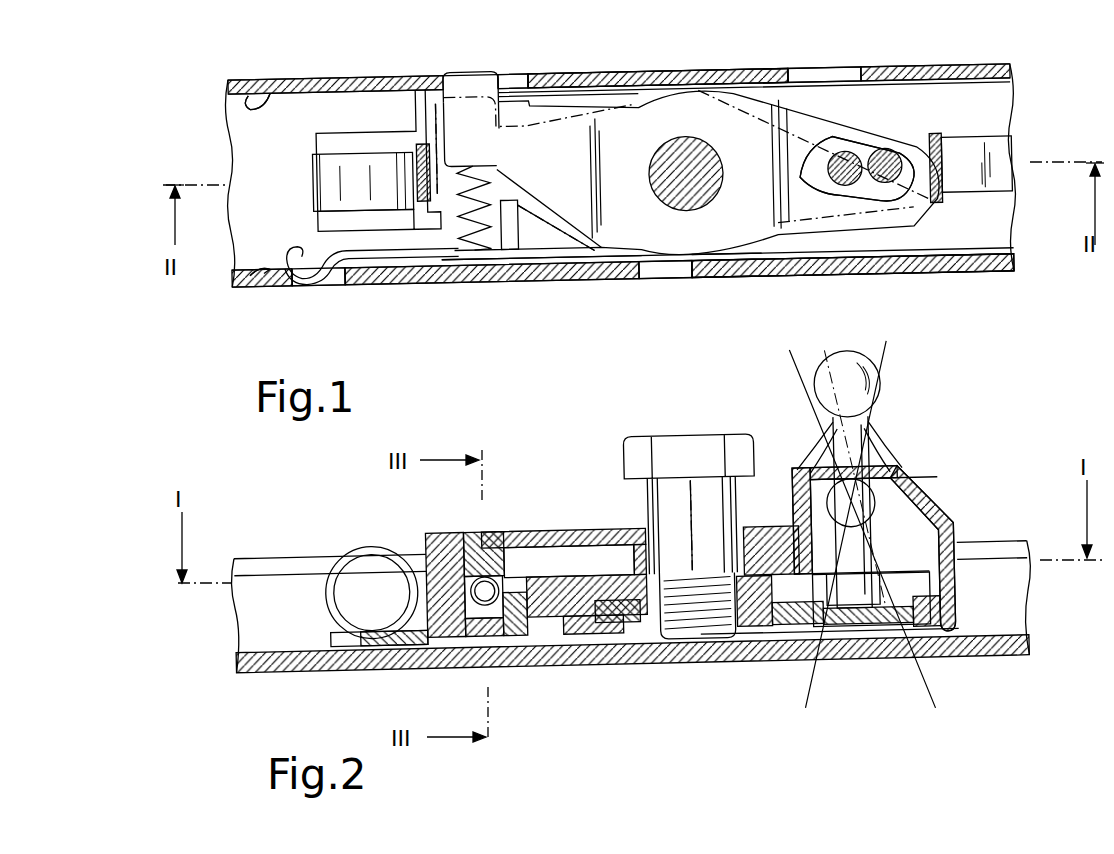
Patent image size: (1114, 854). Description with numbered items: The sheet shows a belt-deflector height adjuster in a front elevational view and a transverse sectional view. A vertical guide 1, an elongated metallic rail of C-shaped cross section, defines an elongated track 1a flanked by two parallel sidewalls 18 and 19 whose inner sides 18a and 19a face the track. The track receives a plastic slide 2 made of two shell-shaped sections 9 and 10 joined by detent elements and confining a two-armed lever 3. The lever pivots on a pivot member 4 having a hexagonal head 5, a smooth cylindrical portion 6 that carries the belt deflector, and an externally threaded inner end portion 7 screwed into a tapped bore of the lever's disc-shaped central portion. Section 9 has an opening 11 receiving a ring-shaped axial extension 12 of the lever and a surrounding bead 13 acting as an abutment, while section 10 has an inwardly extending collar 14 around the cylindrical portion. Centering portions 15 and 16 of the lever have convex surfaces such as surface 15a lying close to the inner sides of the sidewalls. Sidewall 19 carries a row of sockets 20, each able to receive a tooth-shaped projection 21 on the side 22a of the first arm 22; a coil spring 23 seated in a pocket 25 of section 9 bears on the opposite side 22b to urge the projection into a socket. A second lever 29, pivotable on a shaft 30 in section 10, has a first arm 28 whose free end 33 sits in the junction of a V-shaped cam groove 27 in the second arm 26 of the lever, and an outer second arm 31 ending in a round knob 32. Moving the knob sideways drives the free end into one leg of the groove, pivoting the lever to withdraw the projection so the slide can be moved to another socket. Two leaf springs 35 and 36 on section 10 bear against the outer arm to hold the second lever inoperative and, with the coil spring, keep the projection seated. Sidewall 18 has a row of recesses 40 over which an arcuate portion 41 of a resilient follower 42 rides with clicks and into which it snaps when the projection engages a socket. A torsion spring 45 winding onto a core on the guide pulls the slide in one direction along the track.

In FIG. 1, the guide 1 is at (520, 286).
In FIG. 2, the guide 1 is at (268, 686).
In FIG. 1, the track 1a is at (286, 182).
In FIG. 1, the slide 2 is at (548, 268).
In FIG. 1, the lever 3 is at (566, 160).
In FIG. 2, the lever 3 is at (541, 648).
In FIG. 1, the pivot member 4 is at (660, 160).
In FIG. 2, the pivot member 4 is at (655, 512).
In FIG. 2, the head 5 is at (692, 438).
In FIG. 2, the smooth cylindrical portion 6 is at (699, 529).
In FIG. 2, the externally threaded inner end portion 7 is at (690, 627).
In FIG. 2, the section 9 is at (590, 650).
In FIG. 2, the section 10 is at (553, 533).
In FIG. 2, the opening 11 is at (755, 648).
In FIG. 2, the ring-shaped axial extension 12 is at (635, 652).
In FIG. 2, the bead 13 is at (795, 652).
In FIG. 2, the collar 14 is at (760, 551).
In FIG. 1, the centering portion 15 is at (740, 252).
In FIG. 1, the convex surface 15a is at (722, 259).
In FIG. 1, the centering portion 16 is at (636, 108).
In FIG. 1, the sidewall 18 is at (830, 274).
In FIG. 1, the inner side 18a is at (254, 268).
In FIG. 1, the sidewall 19 is at (708, 75).
In FIG. 1, the inner side 19a is at (279, 84).
In FIG. 1, the socket 20 is at (512, 80).
In FIG. 1, the projection 21 is at (468, 78).
In FIG. 1, the first arm 22 is at (490, 151).
In FIG. 1, the side 22a is at (540, 100).
In FIG. 1, the side 22b is at (594, 193).
In FIG. 1, the coil spring 23 is at (470, 251).
In FIG. 2, the coil spring 23 is at (489, 662).
In FIG. 1, the pocket 25 is at (505, 250).
In FIG. 1, the second arm 26 is at (807, 133).
In FIG. 1, the cam groove 27 is at (878, 205).
In FIG. 2, the cam groove 27 is at (895, 648).
In FIG. 2, the first arm 28 is at (862, 553).
In FIG. 2, the second lever 29 is at (922, 477).
In FIG. 2, the shaft 30 is at (874, 506).
In FIG. 2, the second arm 31 is at (874, 430).
In FIG. 2, the knob 32 is at (882, 376).
In FIG. 2, the free end 33 is at (855, 652).
In FIG. 2, the leaf spring 35 is at (905, 452).
In FIG. 2, the leaf spring 36 is at (809, 442).
In FIG. 1, the recess 40 is at (335, 287).
In FIG. 1, the arcuate portion 41 is at (285, 263).
In FIG. 1, the resilient follower 42 is at (370, 259).
In FIG. 2, the torsion spring 45 is at (356, 546).